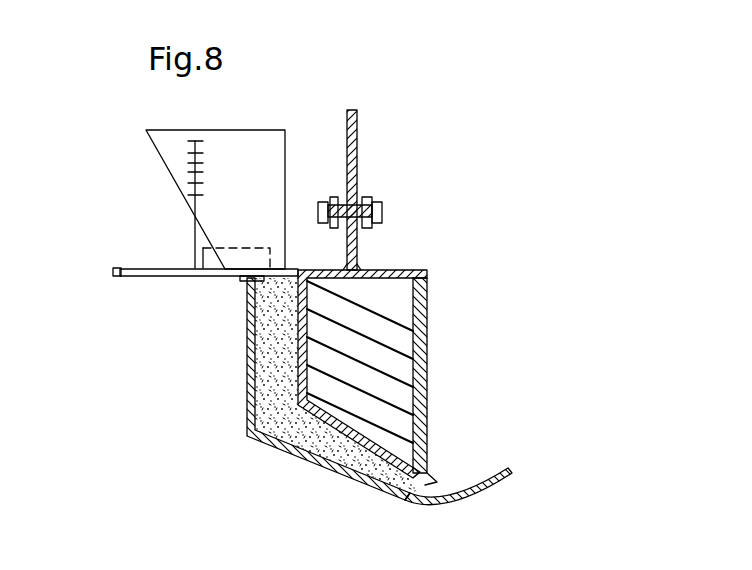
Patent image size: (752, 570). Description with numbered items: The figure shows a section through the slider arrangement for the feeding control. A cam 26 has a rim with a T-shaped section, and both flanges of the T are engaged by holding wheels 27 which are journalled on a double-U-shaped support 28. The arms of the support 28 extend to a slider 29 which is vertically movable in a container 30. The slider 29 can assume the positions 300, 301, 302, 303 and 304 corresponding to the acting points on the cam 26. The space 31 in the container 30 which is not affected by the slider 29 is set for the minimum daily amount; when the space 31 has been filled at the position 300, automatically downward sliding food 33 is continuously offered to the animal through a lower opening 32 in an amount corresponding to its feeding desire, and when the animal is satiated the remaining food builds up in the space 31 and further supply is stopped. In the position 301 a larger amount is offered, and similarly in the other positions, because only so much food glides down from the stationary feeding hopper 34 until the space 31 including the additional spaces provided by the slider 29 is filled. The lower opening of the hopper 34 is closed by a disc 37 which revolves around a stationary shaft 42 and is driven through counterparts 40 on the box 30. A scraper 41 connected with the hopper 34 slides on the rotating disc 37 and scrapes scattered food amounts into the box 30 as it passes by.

The cam 26 is at (352, 137).
The holding wheels 27 is at (368, 197).
The double-U-shaped support 28 is at (382, 206).
The slider 29 is at (308, 352).
The container 30 is at (273, 313).
The slider position 300 is at (385, 455).
The slider position 301 is at (378, 420).
The slider position 302 is at (378, 388).
The slider position 303 is at (378, 356).
The slider position 304 is at (378, 322).
The space 31 is at (277, 415).
The lower opening 32 is at (403, 499).
The food 33 is at (505, 475).
The stationary feeding hopper 34 is at (287, 138).
The disc 37 is at (117, 268).
The counterparts 40 is at (242, 279).
The scraper 41 is at (203, 250).
The stationary shaft 42 is at (195, 153).